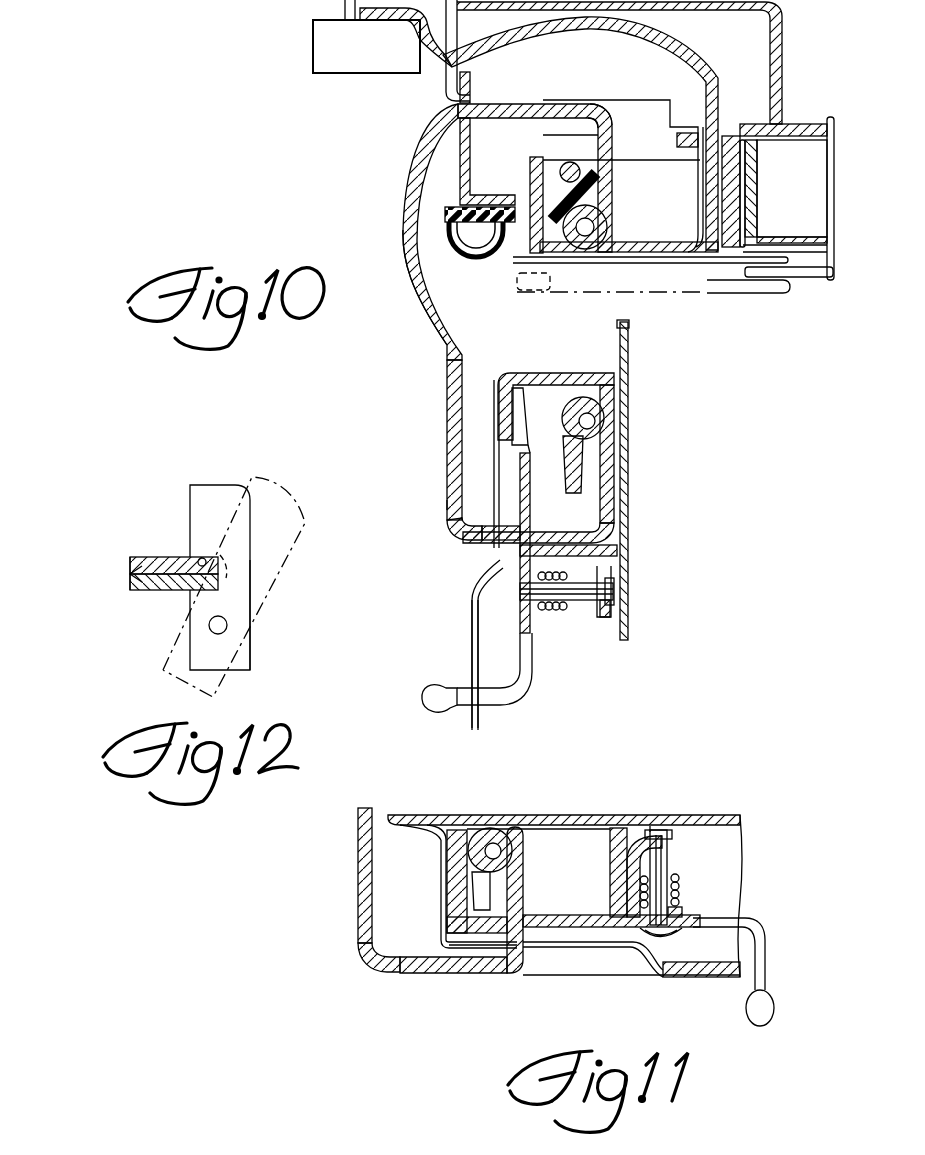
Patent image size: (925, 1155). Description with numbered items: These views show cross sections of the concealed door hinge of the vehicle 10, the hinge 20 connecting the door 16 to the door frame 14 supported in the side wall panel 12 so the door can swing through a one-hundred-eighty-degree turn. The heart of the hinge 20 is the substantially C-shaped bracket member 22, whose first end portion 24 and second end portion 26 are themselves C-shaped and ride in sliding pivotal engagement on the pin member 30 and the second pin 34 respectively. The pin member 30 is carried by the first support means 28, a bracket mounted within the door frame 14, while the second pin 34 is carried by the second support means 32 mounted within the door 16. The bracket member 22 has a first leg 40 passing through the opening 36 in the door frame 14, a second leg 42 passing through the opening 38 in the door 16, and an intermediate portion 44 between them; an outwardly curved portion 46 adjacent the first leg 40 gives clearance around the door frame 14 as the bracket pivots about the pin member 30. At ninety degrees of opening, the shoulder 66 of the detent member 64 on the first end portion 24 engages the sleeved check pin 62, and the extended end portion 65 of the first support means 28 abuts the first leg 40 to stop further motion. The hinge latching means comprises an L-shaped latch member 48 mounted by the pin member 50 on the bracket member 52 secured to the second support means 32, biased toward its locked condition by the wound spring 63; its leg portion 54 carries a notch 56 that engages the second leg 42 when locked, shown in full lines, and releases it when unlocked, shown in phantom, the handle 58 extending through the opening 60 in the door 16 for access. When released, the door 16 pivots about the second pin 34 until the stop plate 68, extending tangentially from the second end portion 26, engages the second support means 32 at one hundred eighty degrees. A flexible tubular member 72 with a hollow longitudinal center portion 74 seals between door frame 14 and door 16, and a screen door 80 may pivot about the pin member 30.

In FIG. 10, the vehicle 10 is at (450, 490).
In FIG. 11, the vehicle 10 is at (657, 815).
In FIG. 10, the side wall panel 12 is at (800, 276).
In FIG. 10, the door frame 14 is at (678, 266).
In FIG. 10, the door 16 is at (627, 437).
In FIG. 11, the door 16 is at (706, 815).
In FIG. 10, the door hinge 20 is at (412, 294).
In FIG. 11, the door hinge 20 is at (391, 976).
In FIG. 12, the door hinge 20 is at (148, 556).
In FIG. 10, the bracket member 22 is at (450, 383).
In FIG. 11, the bracket member 22 is at (362, 950).
In FIG. 10, the first end portion 24 is at (615, 200).
In FIG. 10, the second end portion 26 is at (610, 505).
In FIG. 11, the second end portion 26 is at (524, 887).
In FIG. 10, the first support means 28 is at (735, 190).
In FIG. 10, the pin member 30 is at (585, 250).
In FIG. 10, the second support means 32 is at (603, 550).
In FIG. 11, the second support means 32 is at (620, 829).
In FIG. 12, the second support means 32 is at (160, 585).
In FIG. 10, the second pin 34 is at (590, 421).
In FIG. 11, the second pin 34 is at (498, 847).
In FIG. 10, the opening 36 is at (578, 135).
In FIG. 10, the opening 38 is at (500, 453).
In FIG. 11, the opening 38 is at (510, 940).
In FIG. 10, the first leg 40 is at (503, 115).
In FIG. 10, the second leg 42 is at (480, 548).
In FIG. 11, the second leg 42 is at (437, 973).
In FIG. 12, the second leg 42 is at (185, 555).
In FIG. 10, the intermediate portion 44 is at (446, 345).
In FIG. 11, the intermediate portion 44 is at (360, 850).
In FIG. 10, the outwardly curved portion 46 is at (406, 192).
In FIG. 10, the latch member 48 is at (535, 676).
In FIG. 11, the latch member 48 is at (770, 948).
In FIG. 12, the latch member 48 is at (254, 612).
In FIG. 10, the pin member 50 is at (575, 598).
In FIG. 11, the pin member 50 is at (660, 870).
In FIG. 10, the bracket member 52 is at (612, 612).
In FIG. 11, the bracket member 52 is at (685, 846).
In FIG. 10, the leg portion 54 is at (521, 512).
In FIG. 11, the leg portion 54 is at (602, 920).
In FIG. 12, the leg portion 54 is at (236, 490).
In FIG. 12, the notch 56 is at (205, 558).
In FIG. 10, the handle 58 is at (465, 688).
In FIG. 10, the opening 60 is at (470, 707).
In FIG. 10, the check pin 62 is at (560, 165).
In FIG. 10, the wound spring 63 is at (553, 611).
In FIG. 11, the wound spring 63 is at (684, 900).
In FIG. 10, the detent member 64 is at (602, 148).
In FIG. 10, the extended end portion 65 is at (538, 126).
In FIG. 10, the shoulder 66 is at (578, 175).
In FIG. 10, the stop plate 68 is at (575, 470).
In FIG. 11, the stop plate 68 is at (480, 897).
In FIG. 10, the flexible tubular member 72 is at (492, 258).
In FIG. 10, the hollow longitudinal center portion 74 is at (455, 240).
In FIG. 10, the screen door 80 is at (350, 6).